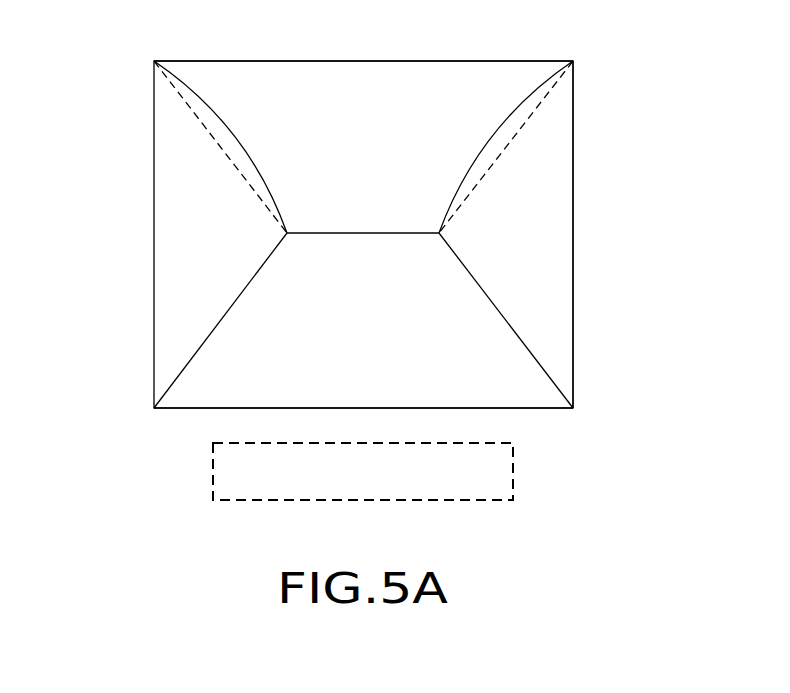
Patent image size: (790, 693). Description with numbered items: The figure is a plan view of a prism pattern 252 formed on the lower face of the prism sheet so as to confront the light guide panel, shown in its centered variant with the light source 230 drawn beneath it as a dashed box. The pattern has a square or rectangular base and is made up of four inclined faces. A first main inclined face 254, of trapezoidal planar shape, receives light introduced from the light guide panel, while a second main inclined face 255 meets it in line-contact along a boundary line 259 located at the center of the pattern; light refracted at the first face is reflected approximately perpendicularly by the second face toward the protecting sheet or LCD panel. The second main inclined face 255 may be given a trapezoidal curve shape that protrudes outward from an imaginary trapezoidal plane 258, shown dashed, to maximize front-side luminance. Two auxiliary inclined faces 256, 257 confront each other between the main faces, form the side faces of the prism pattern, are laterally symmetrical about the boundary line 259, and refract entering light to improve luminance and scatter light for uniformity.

The light source 230 is at (212, 470).
The prism pattern 252 is at (590, 78).
The first main inclined face 254 is at (533, 400).
The second main inclined face 255 is at (441, 77).
The auxiliary inclined face 256 is at (180, 243).
The auxiliary inclined face 257 is at (555, 250).
The imaginary trapezoidal plane 258 is at (507, 146).
The boundary line 259 is at (366, 232).